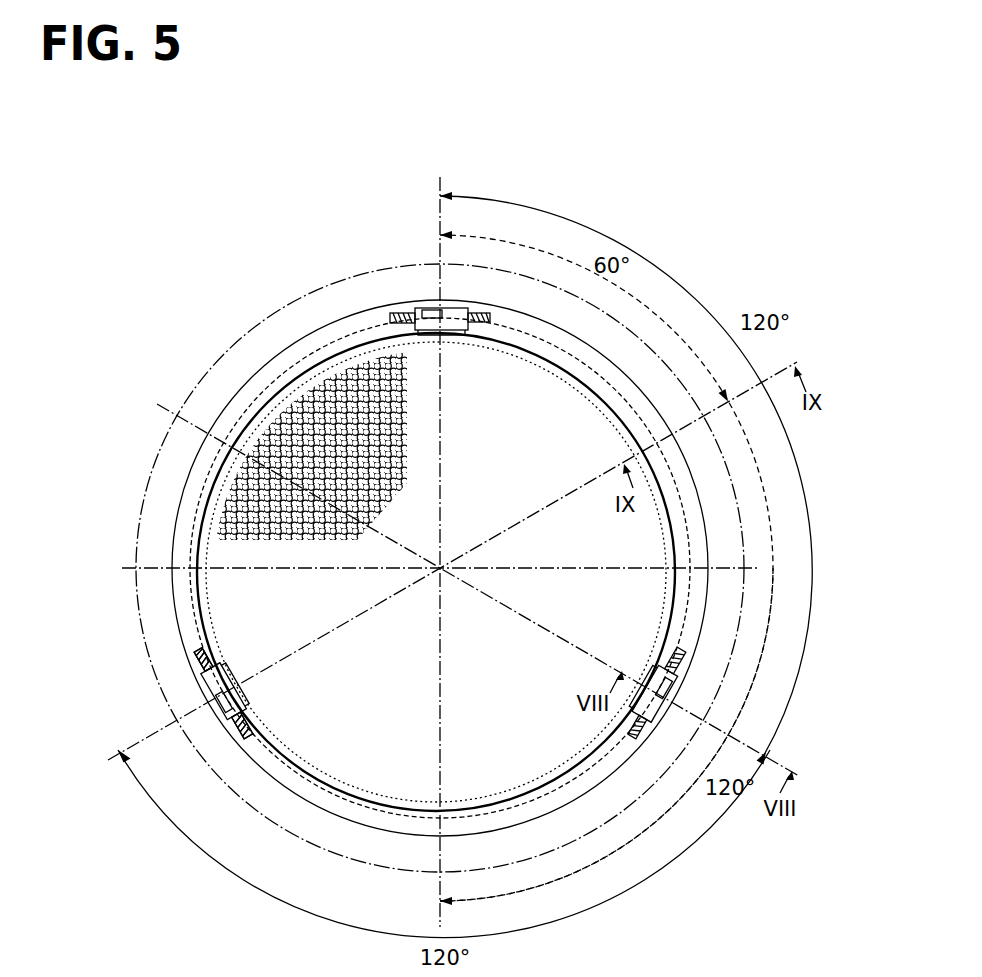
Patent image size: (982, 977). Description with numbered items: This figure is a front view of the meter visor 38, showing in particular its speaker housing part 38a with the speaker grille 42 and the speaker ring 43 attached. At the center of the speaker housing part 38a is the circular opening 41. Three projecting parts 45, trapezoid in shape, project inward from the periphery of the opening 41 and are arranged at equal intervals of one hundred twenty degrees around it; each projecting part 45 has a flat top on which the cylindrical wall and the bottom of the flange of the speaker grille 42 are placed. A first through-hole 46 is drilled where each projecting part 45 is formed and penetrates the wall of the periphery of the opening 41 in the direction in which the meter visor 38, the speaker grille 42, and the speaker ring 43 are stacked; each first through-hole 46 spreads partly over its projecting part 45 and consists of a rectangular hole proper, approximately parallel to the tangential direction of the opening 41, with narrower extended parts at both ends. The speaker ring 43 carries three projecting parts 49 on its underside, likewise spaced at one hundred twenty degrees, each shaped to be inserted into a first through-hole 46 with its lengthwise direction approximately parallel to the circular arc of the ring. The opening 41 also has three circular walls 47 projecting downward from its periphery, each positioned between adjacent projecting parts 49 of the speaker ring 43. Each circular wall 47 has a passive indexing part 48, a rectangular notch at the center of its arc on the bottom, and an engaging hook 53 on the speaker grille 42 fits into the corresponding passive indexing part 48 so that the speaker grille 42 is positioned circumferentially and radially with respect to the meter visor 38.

The meter visor 38 is at (440, 504).
The speaker housing part 38a is at (340, 297).
The opening 41 is at (312, 370).
The speaker grille 42 is at (195, 645).
The speaker ring 43 is at (775, 568).
The projecting part 45 is at (341, 297).
The first through-hole 46 is at (423, 300).
The circular wall 47 is at (192, 520).
The passive indexing part 48 is at (230, 447).
The projecting part 49 is at (407, 305).
The engaging hook 53 is at (207, 433).